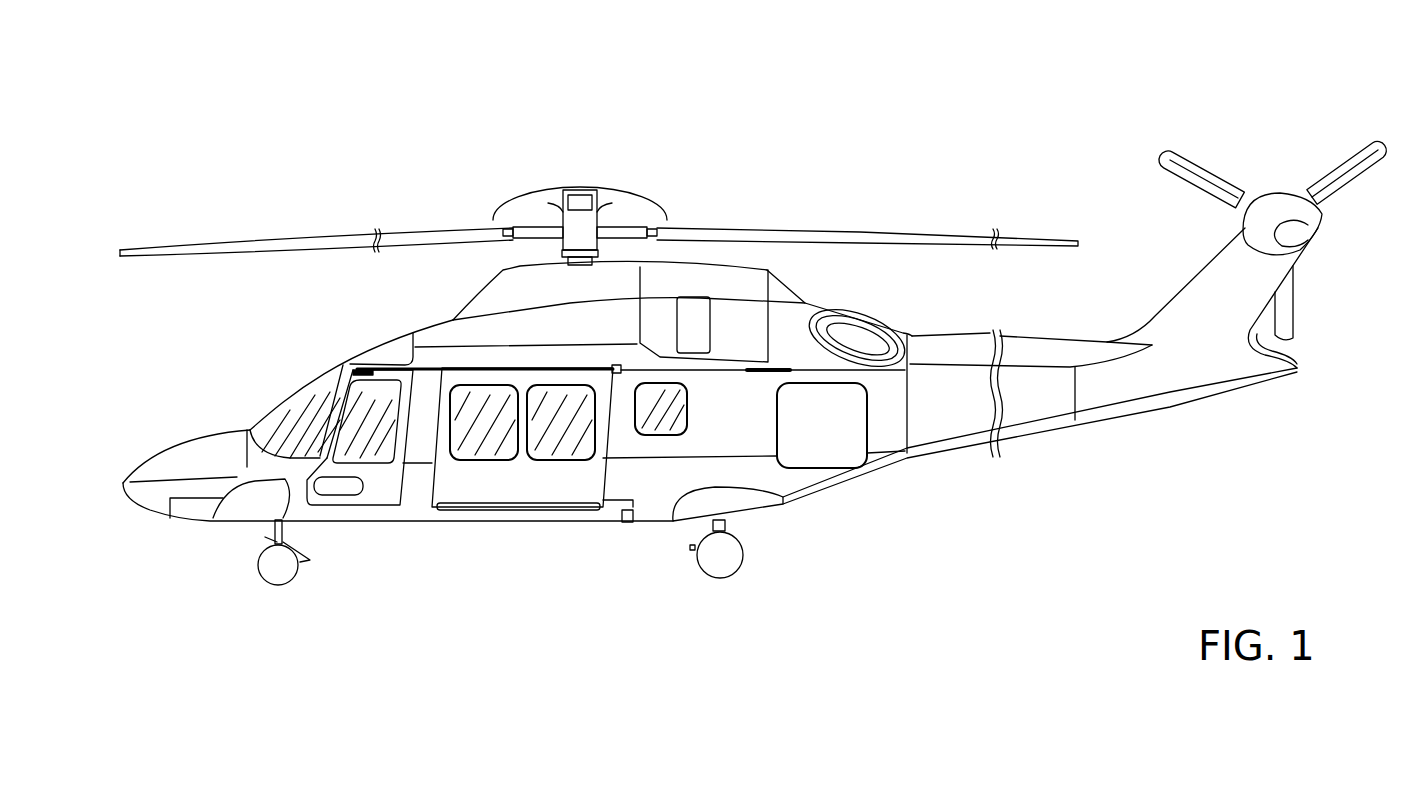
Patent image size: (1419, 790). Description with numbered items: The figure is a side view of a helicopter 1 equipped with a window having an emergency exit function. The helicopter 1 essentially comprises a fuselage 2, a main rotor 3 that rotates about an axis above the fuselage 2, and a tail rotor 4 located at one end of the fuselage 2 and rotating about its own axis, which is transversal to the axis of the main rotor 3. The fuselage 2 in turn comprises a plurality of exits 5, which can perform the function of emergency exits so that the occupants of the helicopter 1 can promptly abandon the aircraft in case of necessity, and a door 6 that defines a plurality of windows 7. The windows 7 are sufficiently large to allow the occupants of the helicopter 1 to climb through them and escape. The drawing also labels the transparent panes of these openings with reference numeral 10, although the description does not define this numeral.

The helicopter 1 is at (905, 182).
The fuselage 2 is at (821, 440).
The main rotor 3 is at (667, 181).
The tail rotor 4 is at (1270, 155).
The exits 5 is at (378, 446).
The door 6 is at (522, 490).
The windows 7 is at (470, 447).
The transparent panels 10 is at (496, 408).